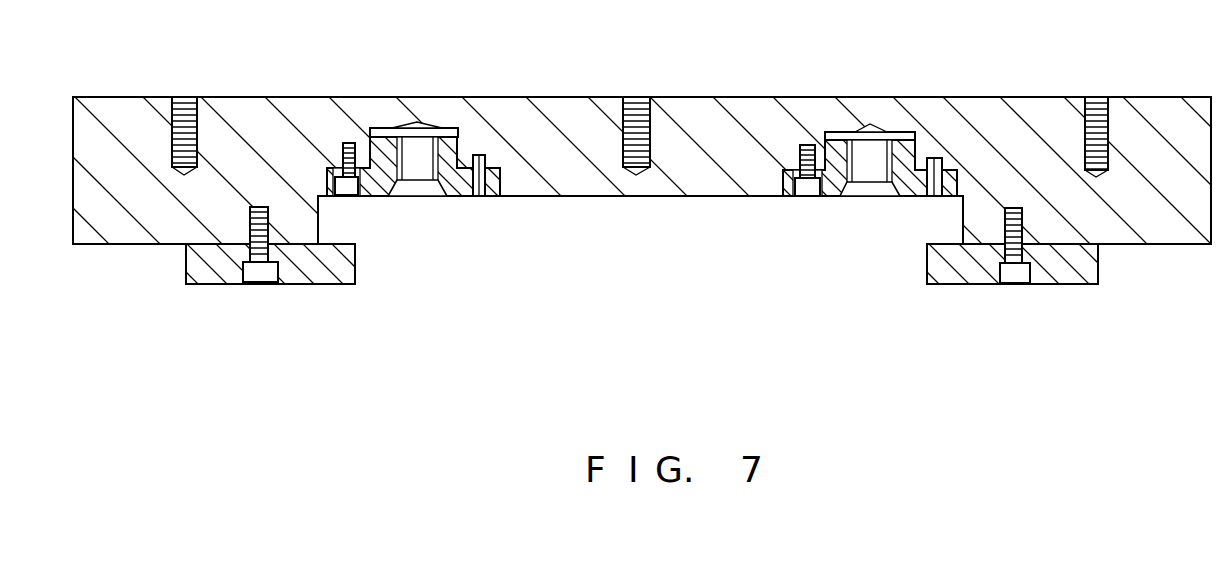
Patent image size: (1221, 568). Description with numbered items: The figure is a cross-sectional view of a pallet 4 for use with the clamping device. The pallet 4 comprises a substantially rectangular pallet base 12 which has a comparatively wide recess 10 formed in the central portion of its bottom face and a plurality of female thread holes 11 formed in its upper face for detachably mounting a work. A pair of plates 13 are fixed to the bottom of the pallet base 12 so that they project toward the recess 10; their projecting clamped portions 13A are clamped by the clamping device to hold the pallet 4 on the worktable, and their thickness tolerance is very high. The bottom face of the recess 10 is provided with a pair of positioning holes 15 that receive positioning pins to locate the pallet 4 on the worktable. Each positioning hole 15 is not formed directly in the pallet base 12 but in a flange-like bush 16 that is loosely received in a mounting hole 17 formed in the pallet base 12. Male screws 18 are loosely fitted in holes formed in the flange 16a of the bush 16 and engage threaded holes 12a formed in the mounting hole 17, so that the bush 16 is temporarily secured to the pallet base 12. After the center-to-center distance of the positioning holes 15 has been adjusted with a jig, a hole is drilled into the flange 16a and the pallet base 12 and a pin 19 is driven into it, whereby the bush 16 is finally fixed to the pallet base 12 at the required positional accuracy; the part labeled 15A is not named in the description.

The pallet 4 is at (968, 78).
The recess 10 is at (645, 197).
The female thread holes 11 is at (182, 97).
The pallet base 12 is at (735, 97).
The threaded holes 12a is at (346, 150).
The plates 13 is at (212, 284).
The projecting clamped portions 13A is at (325, 243).
The positioning hole 15 is at (430, 185).
The bolt head 15A is at (400, 190).
The flange-like bush 16 is at (456, 135).
The flange 16a is at (765, 197).
The mounting hole 17 is at (376, 128).
The male screws 18 is at (341, 143).
The pin 19 is at (480, 155).